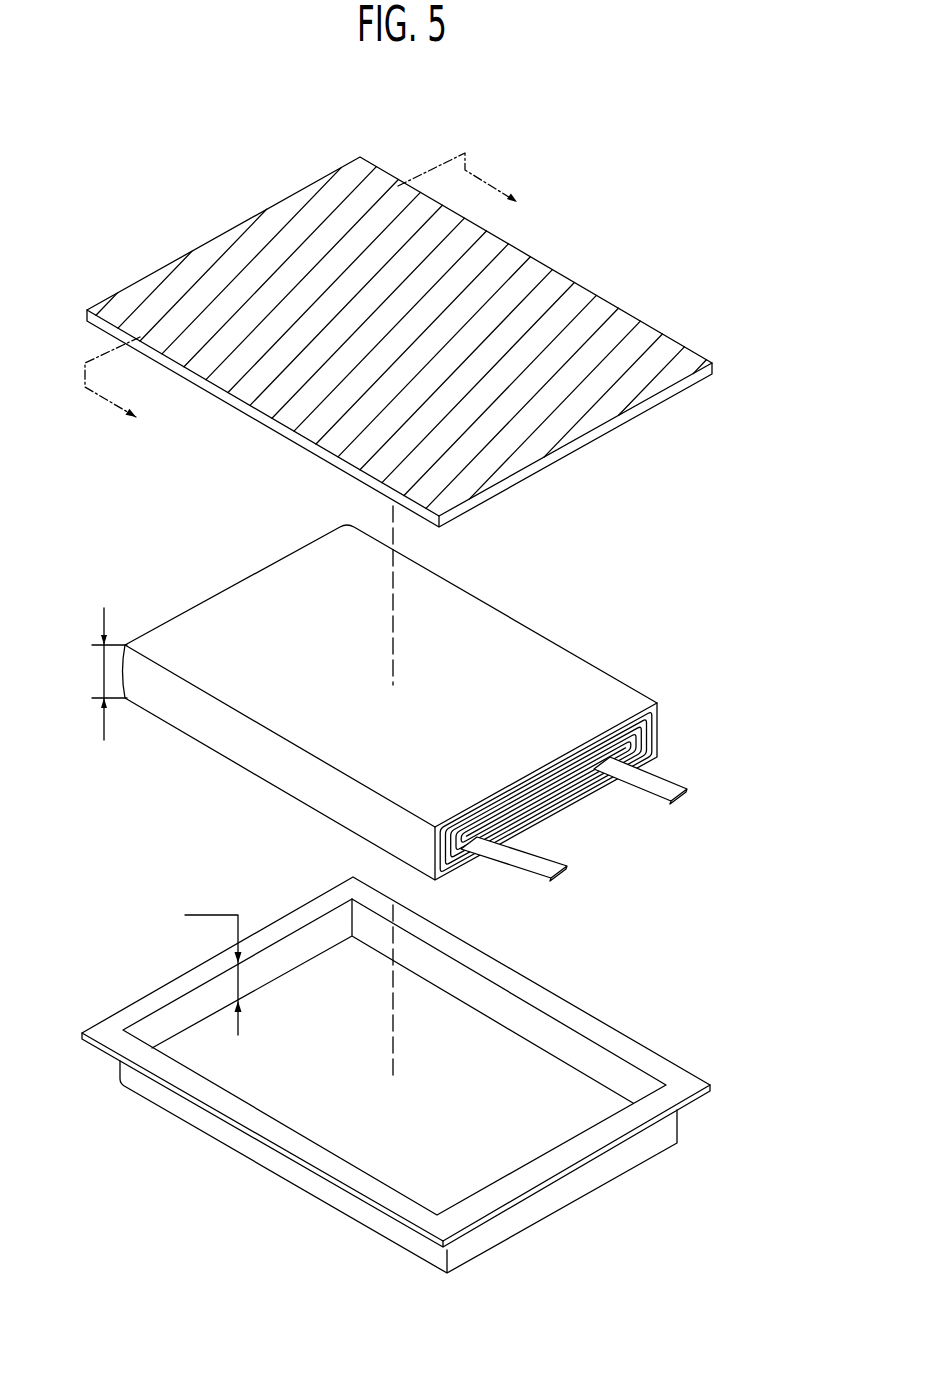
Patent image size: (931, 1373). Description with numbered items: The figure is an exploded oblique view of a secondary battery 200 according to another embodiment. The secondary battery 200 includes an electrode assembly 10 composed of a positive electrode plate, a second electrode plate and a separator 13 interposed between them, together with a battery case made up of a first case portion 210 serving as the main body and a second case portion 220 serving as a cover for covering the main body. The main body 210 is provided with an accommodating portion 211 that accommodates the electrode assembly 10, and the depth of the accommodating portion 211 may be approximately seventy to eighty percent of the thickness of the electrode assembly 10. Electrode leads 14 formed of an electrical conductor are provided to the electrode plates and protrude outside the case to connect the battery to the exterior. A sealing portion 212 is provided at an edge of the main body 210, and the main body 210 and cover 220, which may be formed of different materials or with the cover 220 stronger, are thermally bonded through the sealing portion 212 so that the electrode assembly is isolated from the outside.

The secondary battery 200 is at (178, 168).
The second case portion (cover) 220 is at (566, 256).
The electrode assembly 10 is at (418, 698).
The separator 13 is at (588, 680).
The electrode leads 14 is at (546, 858).
The first case portion (main body) 210 is at (431, 1075).
The accommodating portion 211 is at (477, 1130).
The sealing portion 212 is at (625, 1043).